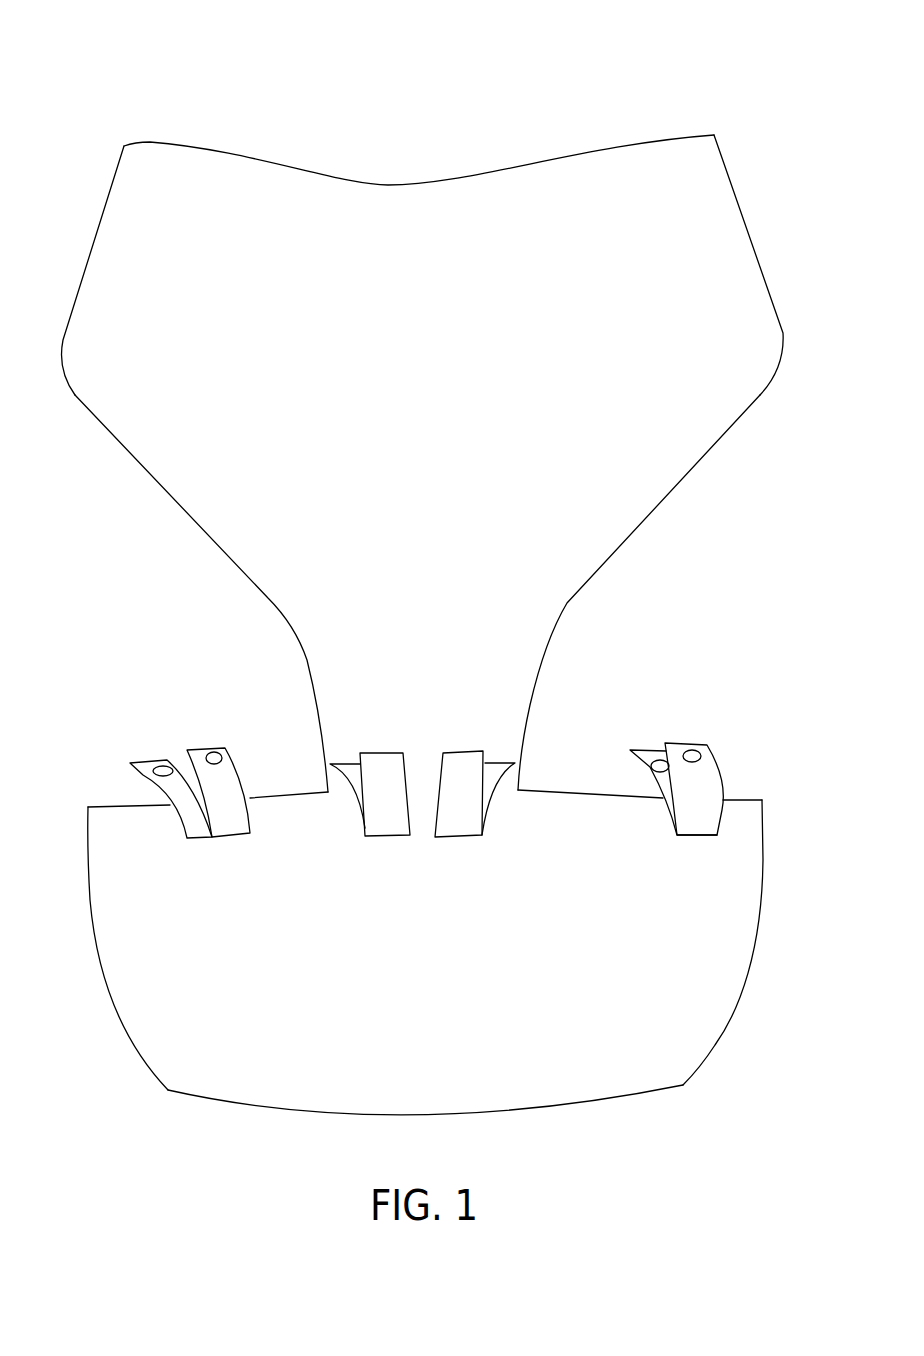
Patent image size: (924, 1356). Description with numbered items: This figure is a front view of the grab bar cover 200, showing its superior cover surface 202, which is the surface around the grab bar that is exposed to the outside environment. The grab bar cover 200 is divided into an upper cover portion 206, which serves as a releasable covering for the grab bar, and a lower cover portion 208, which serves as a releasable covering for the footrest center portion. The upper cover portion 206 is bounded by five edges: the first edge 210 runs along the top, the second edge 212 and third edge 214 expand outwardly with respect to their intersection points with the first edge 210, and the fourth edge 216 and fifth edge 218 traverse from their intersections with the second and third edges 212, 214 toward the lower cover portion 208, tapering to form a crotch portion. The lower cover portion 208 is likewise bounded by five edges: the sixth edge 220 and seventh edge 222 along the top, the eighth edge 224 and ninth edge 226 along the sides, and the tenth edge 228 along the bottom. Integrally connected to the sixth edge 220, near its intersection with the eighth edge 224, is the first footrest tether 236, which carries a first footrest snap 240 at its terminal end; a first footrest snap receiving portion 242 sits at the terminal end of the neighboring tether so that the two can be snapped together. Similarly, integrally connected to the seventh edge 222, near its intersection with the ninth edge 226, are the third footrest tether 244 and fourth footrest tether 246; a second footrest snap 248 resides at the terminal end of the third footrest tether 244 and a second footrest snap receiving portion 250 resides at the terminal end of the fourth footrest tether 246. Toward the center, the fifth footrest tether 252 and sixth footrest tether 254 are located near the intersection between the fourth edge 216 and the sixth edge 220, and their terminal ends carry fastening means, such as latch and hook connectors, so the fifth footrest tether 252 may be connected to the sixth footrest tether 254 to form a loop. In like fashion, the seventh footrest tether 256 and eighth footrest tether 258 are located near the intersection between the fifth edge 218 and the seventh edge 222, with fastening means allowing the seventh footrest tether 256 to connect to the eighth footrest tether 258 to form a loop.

The grab bar cover 200 is at (429, 580).
The superior cover surface 202 is at (129, 80).
The upper cover portion 206 is at (432, 385).
The lower cover portion 208 is at (438, 993).
The first edge 210 is at (388, 185).
The second edge 212 is at (93, 234).
The third edge 214 is at (753, 232).
The fourth edge 216 is at (270, 602).
The fifth edge 218 is at (558, 620).
The sixth edge 220 is at (127, 805).
The seventh edge 222 is at (742, 800).
The eighth edge 224 is at (113, 1000).
The ninth edge 226 is at (728, 1022).
The tenth edge 228 is at (430, 1117).
The first footrest tether 236 is at (155, 757).
The first footrest snap 240 is at (152, 772).
The first footrest snap receiving portion 242 is at (213, 756).
The third footrest tether 244 is at (653, 750).
The fourth footrest tether 246 is at (677, 743).
The second footrest snap 248 is at (650, 767).
The second footrest snap receiving portion 250 is at (700, 757).
The fifth footrest tether 252 is at (337, 762).
The sixth footrest tether 254 is at (378, 752).
The seventh footrest tether 256 is at (467, 752).
The eighth footrest tether 258 is at (230, 753).